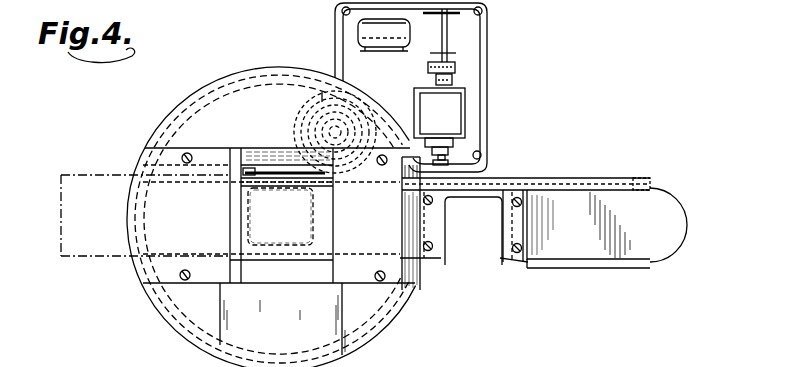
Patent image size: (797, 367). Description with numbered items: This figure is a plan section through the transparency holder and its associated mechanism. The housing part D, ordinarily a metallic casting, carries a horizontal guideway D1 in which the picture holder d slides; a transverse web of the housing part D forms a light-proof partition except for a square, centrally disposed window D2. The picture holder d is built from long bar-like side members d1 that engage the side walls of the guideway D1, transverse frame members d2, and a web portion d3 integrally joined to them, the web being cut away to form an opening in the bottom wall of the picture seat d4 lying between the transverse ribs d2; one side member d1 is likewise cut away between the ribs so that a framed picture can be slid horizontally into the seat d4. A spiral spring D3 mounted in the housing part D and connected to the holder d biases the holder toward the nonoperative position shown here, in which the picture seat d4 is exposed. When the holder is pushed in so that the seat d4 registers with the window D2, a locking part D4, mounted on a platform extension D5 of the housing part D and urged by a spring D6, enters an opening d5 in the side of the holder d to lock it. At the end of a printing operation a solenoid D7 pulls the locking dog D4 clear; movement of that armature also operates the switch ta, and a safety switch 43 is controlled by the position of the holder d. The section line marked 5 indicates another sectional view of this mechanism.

The housing part D is at (389, 337).
The horizontal guideway D1 is at (230, 187).
The window D2 is at (315, 223).
The spring D3 is at (277, 168).
The locking part D4 is at (482, 157).
The platform extension D5 is at (487, 118).
The spring D6 is at (455, 76).
The solenoid D7 is at (456, 122).
The switch ta is at (358, 23).
The safety switch 43 is at (403, 36).
The section line 5- 5 is at (478, 24).
The picture holder d is at (607, 178).
The side members d1 is at (553, 183).
The transverse frame members d2 is at (443, 262).
The web portion d3 is at (250, 217).
The picture seat d4 is at (473, 231).
The opening d5 is at (645, 178).